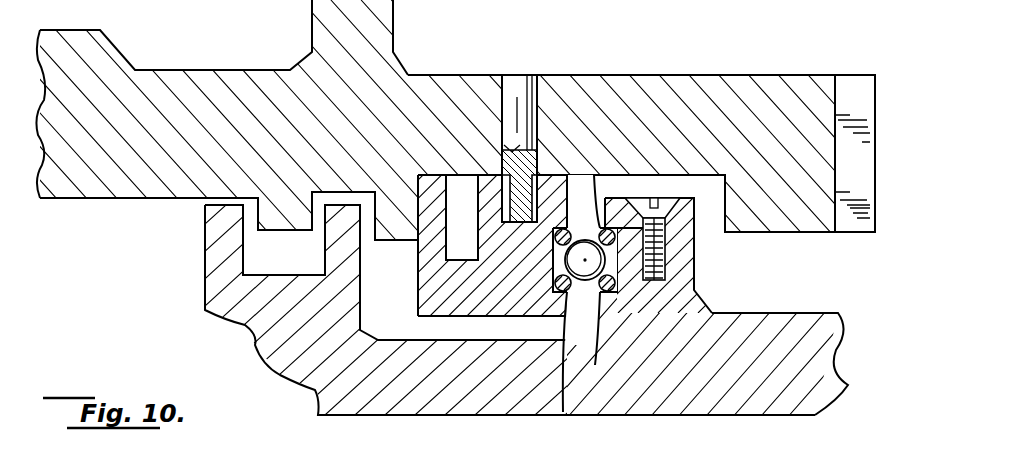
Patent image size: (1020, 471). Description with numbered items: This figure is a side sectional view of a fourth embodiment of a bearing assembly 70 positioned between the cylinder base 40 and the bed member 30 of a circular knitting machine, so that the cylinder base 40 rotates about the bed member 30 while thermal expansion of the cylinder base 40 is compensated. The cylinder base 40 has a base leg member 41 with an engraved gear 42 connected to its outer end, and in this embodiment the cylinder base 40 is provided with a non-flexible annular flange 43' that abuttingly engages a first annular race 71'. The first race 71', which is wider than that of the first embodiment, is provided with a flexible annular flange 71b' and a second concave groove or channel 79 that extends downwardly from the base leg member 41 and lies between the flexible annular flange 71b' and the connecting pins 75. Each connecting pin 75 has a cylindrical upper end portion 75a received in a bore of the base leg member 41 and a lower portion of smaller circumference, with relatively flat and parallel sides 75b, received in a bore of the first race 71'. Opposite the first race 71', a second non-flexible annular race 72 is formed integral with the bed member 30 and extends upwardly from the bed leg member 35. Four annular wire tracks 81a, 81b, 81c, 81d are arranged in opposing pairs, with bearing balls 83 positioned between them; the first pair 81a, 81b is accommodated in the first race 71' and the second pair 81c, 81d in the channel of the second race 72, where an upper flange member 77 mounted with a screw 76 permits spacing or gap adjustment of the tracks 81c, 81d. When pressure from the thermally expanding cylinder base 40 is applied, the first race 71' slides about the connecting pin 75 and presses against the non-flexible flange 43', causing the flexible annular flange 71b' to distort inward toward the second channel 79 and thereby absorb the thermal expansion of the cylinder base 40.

The bed member 30 is at (200, 283).
The bed leg member 35 is at (785, 318).
The cylinder base 40 is at (208, 66).
The base leg member 41 is at (655, 88).
The engraved gear 42 is at (868, 90).
The non-flexible annular flange 43' is at (229, 190).
The bearing assembly 70 is at (575, 320).
The first annular race 71' is at (491, 245).
The flexible annular flange 71b' is at (379, 231).
The second non-flexible annular race 72 is at (688, 255).
The connecting pin 75 is at (517, 68).
The cylindrical upper end portion 75a is at (538, 97).
The relatively flat and parallel sides 75b is at (506, 195).
The screw 76 is at (668, 198).
The upper flange member 77 is at (617, 198).
The second concave groove or channel 79 is at (467, 203).
The annular wire track 81a is at (556, 288).
The annular wire track 81b is at (555, 246).
The annular wire track 81c is at (602, 232).
The annular wire track 81d is at (616, 292).
The bearing balls 83 is at (590, 288).